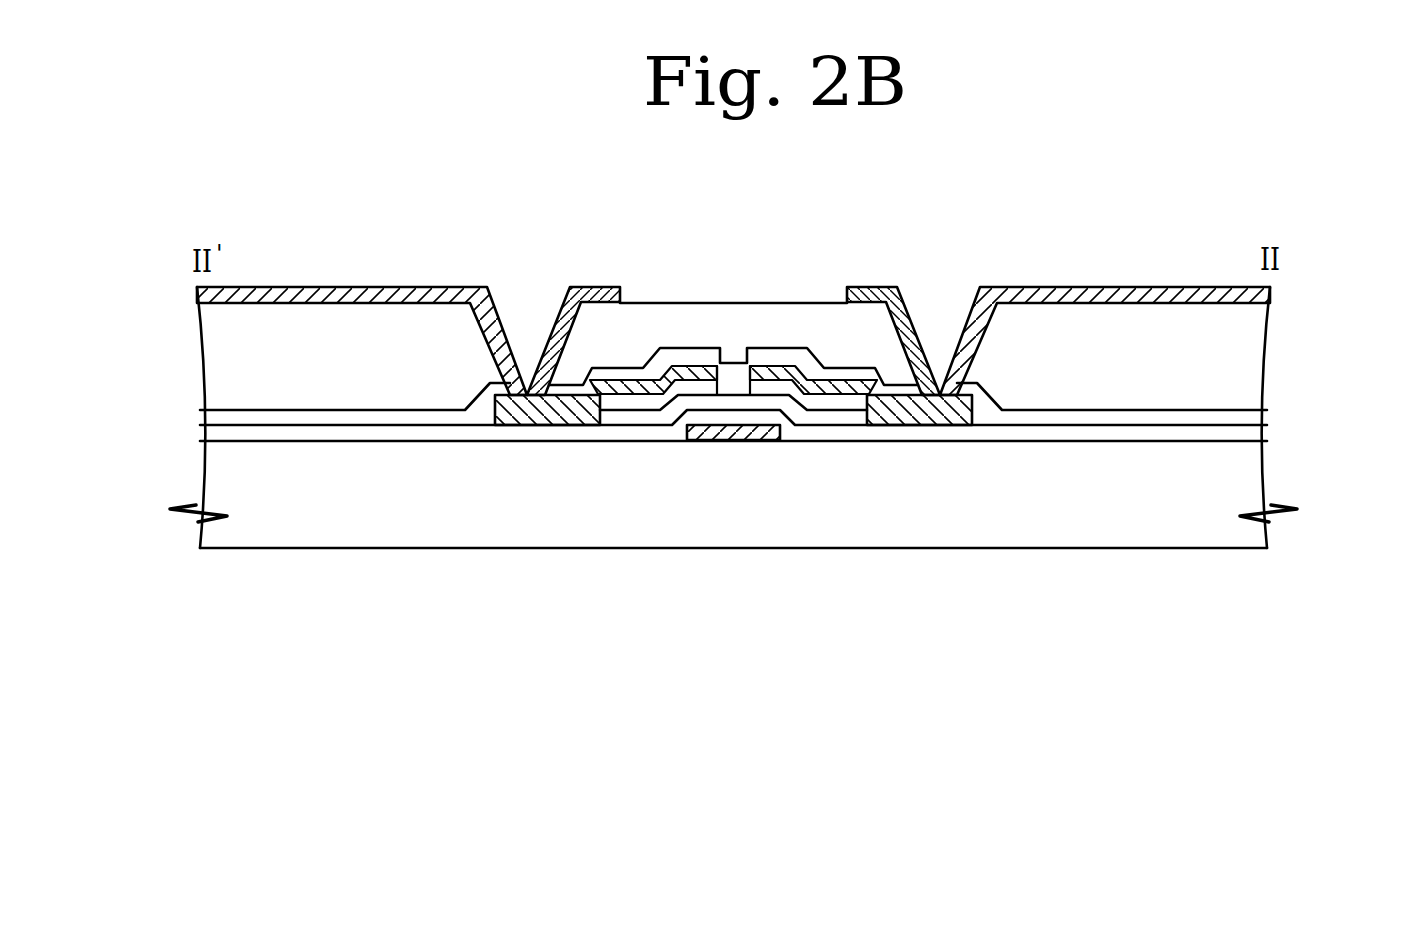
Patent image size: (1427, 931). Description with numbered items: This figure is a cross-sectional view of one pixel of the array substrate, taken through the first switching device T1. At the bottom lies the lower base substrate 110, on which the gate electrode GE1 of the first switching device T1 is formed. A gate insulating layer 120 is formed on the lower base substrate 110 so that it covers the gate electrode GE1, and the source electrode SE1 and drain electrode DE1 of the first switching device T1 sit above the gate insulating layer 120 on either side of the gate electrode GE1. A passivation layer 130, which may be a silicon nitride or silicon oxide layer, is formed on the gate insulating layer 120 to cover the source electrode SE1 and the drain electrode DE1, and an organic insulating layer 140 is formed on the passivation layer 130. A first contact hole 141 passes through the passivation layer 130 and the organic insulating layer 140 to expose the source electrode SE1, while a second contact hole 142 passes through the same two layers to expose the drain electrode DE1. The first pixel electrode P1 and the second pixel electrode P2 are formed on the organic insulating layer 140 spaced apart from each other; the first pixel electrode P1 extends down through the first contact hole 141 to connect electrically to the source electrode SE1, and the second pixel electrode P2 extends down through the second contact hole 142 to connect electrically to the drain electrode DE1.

The lower base substrate 110 is at (220, 478).
The gate insulating layer 120 is at (210, 430).
The passivation layer 130 is at (218, 415).
The organic insulating layer 140 is at (220, 357).
The first contact hole 141 is at (530, 305).
The second contact hole 142 is at (937, 305).
The first pixel electrode P1 is at (432, 287).
The second pixel electrode P2 is at (1035, 287).
The first switching device T1 is at (948, 601).
The source electrode SE1 is at (543, 425).
The gate electrode GE1 is at (733, 440).
The drain electrode DE1 is at (912, 425).